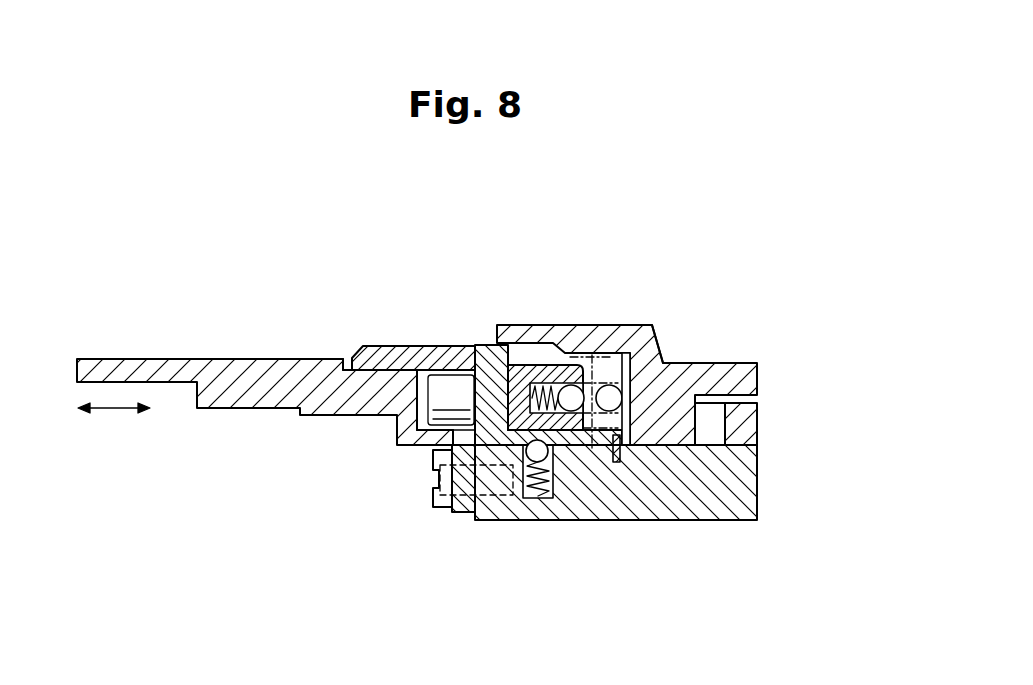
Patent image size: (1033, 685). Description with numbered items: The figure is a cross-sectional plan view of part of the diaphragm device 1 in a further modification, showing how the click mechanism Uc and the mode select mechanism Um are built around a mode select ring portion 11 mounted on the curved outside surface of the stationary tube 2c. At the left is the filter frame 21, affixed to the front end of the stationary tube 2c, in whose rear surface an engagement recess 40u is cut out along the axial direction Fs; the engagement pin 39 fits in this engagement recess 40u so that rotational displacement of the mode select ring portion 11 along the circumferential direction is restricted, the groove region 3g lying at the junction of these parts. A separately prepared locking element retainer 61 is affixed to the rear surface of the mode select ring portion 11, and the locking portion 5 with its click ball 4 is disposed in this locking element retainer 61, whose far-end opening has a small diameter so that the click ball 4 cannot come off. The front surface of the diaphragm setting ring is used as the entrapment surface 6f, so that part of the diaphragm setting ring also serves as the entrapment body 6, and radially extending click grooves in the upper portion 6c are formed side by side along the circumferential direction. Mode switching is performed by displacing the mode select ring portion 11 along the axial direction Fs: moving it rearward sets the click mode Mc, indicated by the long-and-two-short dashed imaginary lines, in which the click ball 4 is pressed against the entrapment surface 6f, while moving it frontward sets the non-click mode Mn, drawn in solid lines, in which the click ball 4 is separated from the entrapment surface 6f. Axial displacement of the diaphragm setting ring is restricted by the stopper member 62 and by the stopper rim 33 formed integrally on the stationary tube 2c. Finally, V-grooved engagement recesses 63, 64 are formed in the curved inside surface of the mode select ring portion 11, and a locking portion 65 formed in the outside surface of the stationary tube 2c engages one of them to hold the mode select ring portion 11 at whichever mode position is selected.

The diaphragm device 1 is at (750, 264).
The filter frame 21 is at (202, 358).
The engagement recess 40u is at (417, 396).
The groove 3g is at (370, 340).
The mode select ring portion 11 is at (422, 344).
The locking element retainer 61 is at (535, 364).
The cover portion 6c is at (667, 350).
The entrapment surface 6f is at (722, 402).
The engagement pin 39 is at (425, 426).
The engagement recess 63 is at (448, 453).
The engagement recess 64 is at (527, 455).
The locking portion 65 is at (520, 503).
The locking portion 5 is at (573, 452).
The click ball 4 is at (590, 447).
The stopper member 62 is at (612, 412).
The entrapment body 6 is at (680, 452).
The stationary tube 2c is at (715, 521).
The stopper rim 33 is at (742, 506).
The mode select mechanism Um is at (467, 343).
The non-click mode Mn is at (553, 347).
The click mechanism Uc is at (592, 346).
The click mode Mc is at (617, 348).
The axial direction Fs is at (113, 410).